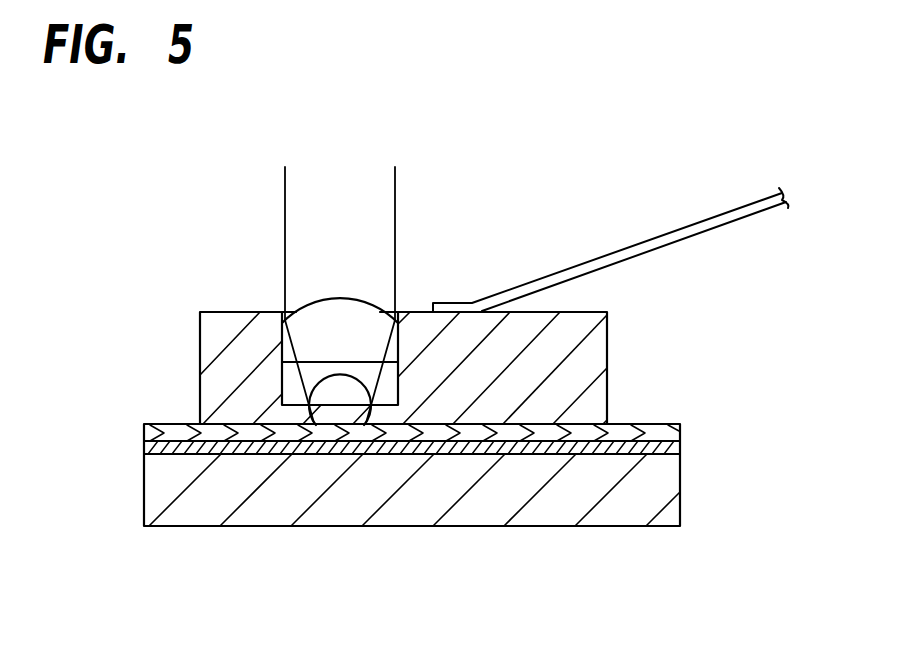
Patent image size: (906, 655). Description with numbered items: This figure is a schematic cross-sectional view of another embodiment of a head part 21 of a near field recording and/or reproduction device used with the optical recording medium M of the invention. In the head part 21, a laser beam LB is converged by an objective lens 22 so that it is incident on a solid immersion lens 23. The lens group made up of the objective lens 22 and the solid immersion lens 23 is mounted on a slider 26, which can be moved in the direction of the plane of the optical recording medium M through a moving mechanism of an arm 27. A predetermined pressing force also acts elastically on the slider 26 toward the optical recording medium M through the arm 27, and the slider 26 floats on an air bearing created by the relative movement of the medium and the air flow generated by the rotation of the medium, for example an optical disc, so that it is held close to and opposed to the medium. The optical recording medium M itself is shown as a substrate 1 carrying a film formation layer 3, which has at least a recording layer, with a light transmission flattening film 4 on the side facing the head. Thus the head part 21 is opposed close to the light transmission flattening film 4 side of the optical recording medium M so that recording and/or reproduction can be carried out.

The substrate 1 is at (653, 490).
The film formation layer 3 is at (662, 443).
The light transmission flattening film 4 is at (665, 432).
The head part 21 is at (110, 273).
The objective lens 22 is at (335, 305).
The solid immersion lens 23 is at (337, 398).
The slider 26 is at (608, 345).
The arm 27 is at (670, 237).
The laser beam LB is at (395, 203).
The optical recording medium M is at (585, 623).